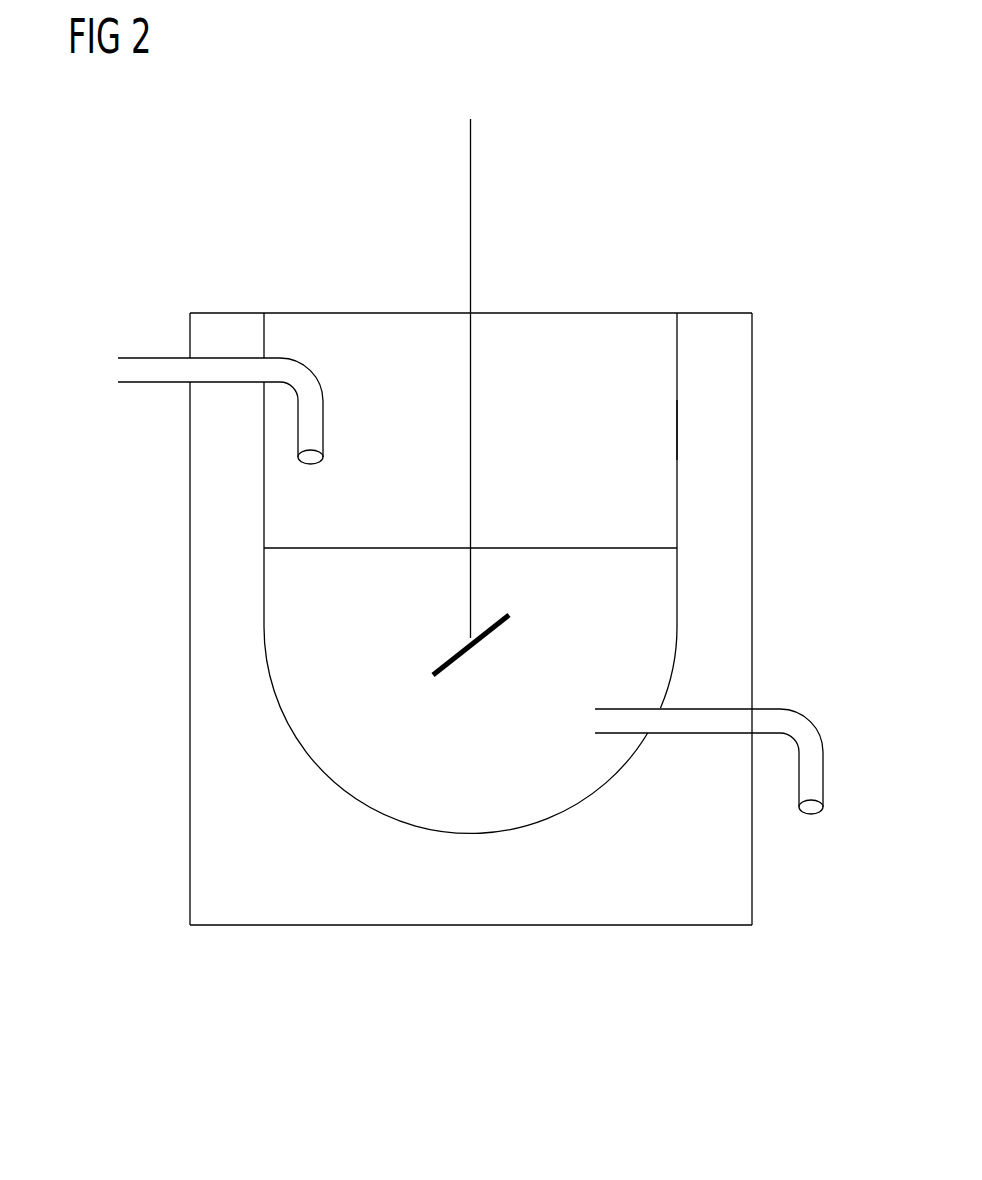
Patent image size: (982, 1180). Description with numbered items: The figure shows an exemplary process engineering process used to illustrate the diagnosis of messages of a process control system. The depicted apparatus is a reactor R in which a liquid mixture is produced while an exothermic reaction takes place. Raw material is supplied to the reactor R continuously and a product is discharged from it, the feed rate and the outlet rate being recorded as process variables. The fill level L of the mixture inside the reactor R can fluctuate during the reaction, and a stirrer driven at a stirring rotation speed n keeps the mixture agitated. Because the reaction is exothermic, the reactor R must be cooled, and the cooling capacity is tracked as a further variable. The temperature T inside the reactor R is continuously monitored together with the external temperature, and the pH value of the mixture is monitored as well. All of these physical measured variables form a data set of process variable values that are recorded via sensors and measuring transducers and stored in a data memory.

The reactor R is at (463, 552).
The stirring rotation speed n is at (449, 118).
The temperature inside the reactor T is at (663, 428).
The fill level L is at (643, 548).